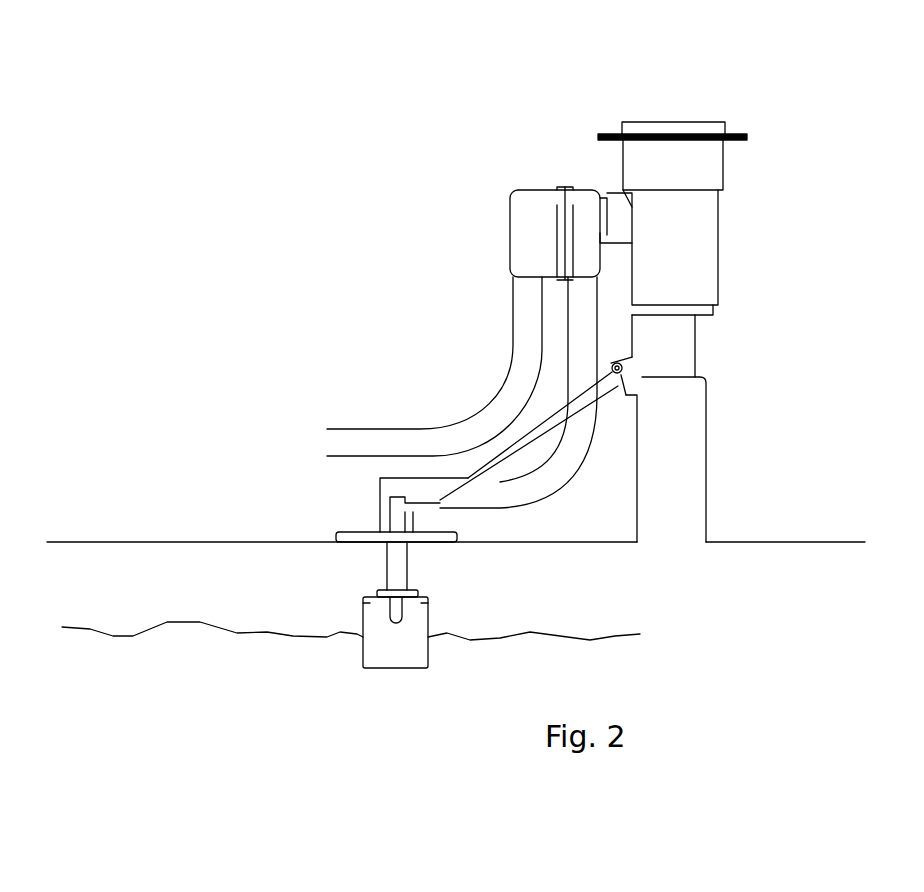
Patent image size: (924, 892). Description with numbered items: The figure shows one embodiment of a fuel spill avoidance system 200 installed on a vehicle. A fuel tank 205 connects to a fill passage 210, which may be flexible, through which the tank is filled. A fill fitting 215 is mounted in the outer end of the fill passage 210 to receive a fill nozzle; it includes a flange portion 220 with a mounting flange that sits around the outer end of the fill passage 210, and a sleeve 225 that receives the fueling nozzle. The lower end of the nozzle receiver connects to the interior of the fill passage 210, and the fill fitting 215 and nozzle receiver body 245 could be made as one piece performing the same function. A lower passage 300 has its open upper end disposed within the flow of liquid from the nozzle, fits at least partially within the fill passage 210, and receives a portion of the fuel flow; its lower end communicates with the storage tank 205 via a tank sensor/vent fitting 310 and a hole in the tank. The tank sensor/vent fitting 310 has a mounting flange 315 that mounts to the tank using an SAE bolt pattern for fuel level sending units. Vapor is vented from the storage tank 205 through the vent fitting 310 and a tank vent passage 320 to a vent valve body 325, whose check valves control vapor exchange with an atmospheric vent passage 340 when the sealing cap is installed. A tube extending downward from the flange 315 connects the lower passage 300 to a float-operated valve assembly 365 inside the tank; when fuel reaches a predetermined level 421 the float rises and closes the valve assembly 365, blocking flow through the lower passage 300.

The fuel spill avoidance system 200 is at (205, 113).
The fuel tank 205 is at (810, 555).
The fill passage 210 is at (700, 477).
The fill fitting 215 is at (832, 143).
The flange portion 220 is at (612, 135).
The sleeve 225 is at (710, 280).
The nozzle receiver body 245 is at (695, 372).
The lower passage 300 is at (522, 442).
The tank sensor/vent fitting 310 is at (345, 493).
The mounting flange 315 is at (343, 533).
The tank vent passage 320 is at (553, 493).
The vent valve body 325 is at (520, 188).
The atmospheric vent passage 340 is at (440, 438).
The valve assembly 365 is at (370, 660).
The predetermined level 421 is at (622, 640).